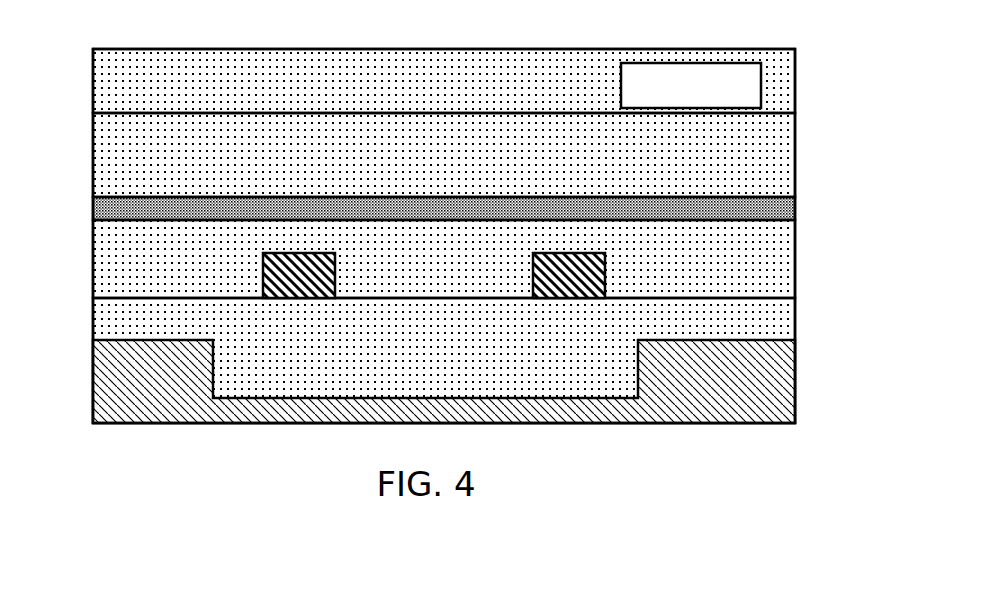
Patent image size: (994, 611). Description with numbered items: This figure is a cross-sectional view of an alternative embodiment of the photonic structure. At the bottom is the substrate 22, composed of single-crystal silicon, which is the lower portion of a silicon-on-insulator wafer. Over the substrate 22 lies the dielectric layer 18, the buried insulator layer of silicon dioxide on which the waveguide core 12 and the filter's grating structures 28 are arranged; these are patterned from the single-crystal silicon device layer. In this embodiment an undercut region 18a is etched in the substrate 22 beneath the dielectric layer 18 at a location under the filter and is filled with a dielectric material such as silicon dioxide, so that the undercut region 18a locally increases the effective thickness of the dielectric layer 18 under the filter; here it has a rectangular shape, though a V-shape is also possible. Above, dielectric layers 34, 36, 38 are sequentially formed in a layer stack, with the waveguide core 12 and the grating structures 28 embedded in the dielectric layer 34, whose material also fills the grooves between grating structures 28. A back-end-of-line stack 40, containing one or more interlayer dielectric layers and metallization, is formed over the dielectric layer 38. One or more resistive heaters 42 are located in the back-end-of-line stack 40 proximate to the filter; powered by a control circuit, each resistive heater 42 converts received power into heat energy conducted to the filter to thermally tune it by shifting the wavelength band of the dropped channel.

The waveguide core 12 is at (280, 273).
The dielectric layer 18 is at (760, 323).
The undercut region 18a is at (385, 372).
The substrate 22 is at (760, 393).
The grating structures 28 is at (587, 267).
The dielectric layer 34 is at (145, 237).
The dielectric layer 36 is at (758, 210).
The dielectric layer 38 is at (142, 161).
The back-end-of-line stack 40 is at (142, 82).
The resistive heaters 42 is at (761, 82).